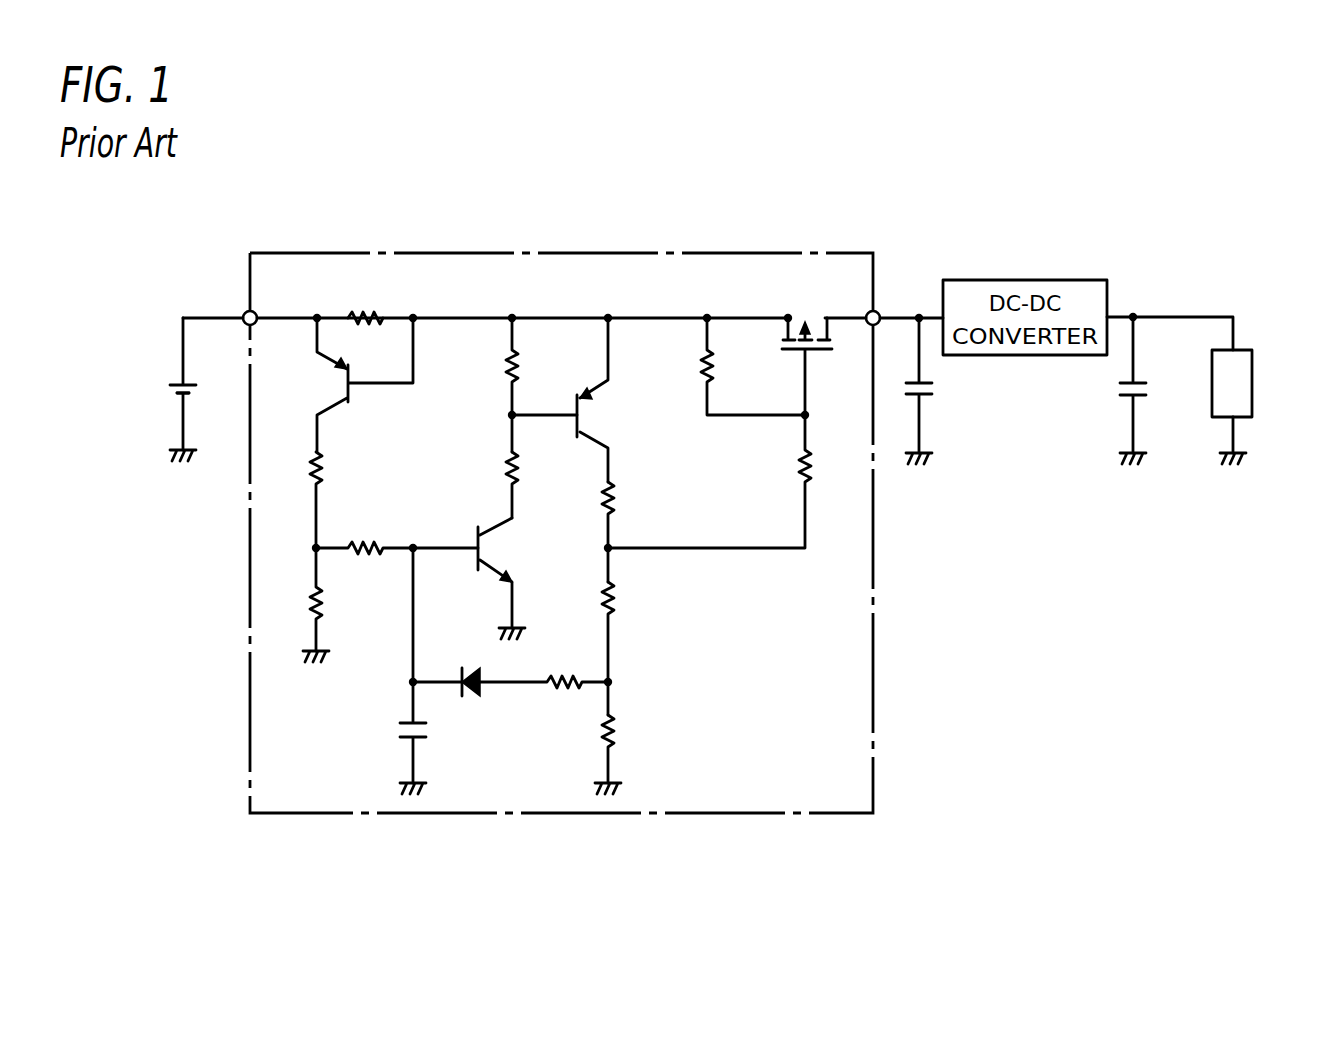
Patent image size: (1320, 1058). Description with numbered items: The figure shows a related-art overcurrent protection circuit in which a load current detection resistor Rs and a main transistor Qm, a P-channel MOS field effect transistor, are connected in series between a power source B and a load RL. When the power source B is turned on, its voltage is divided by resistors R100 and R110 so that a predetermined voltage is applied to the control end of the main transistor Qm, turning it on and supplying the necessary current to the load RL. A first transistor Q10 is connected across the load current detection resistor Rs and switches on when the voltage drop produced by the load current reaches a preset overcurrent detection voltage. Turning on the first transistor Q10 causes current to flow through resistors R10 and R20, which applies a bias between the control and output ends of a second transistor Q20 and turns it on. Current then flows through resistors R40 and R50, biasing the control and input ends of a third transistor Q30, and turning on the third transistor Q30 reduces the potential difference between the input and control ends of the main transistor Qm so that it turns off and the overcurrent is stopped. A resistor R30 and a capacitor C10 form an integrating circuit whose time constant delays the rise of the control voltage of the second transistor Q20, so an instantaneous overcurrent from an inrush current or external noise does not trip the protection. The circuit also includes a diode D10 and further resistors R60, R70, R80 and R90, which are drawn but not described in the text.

The power source B is at (171, 389).
The load current detection resistor Rs is at (365, 299).
The first transistor Q10 is at (339, 385).
The resistor R10 is at (349, 500).
The resistor R20 is at (346, 605).
The resistor R30 is at (395, 531).
The resistor R40 is at (507, 385).
The resistor R50 is at (478, 485).
The resistor R60 is at (544, 662).
The resistor R70 is at (644, 532).
The resistor R80 is at (648, 648).
The resistor R90 is at (644, 754).
The resistor R100 is at (714, 366).
The resistor R110 is at (709, 479).
The second transistor Q20 is at (521, 578).
The third transistor Q30 is at (619, 400).
The main transistor Qm is at (813, 352).
The diode D10 is at (459, 701).
The capacitor C10 is at (384, 671).
The load RL is at (1250, 407).